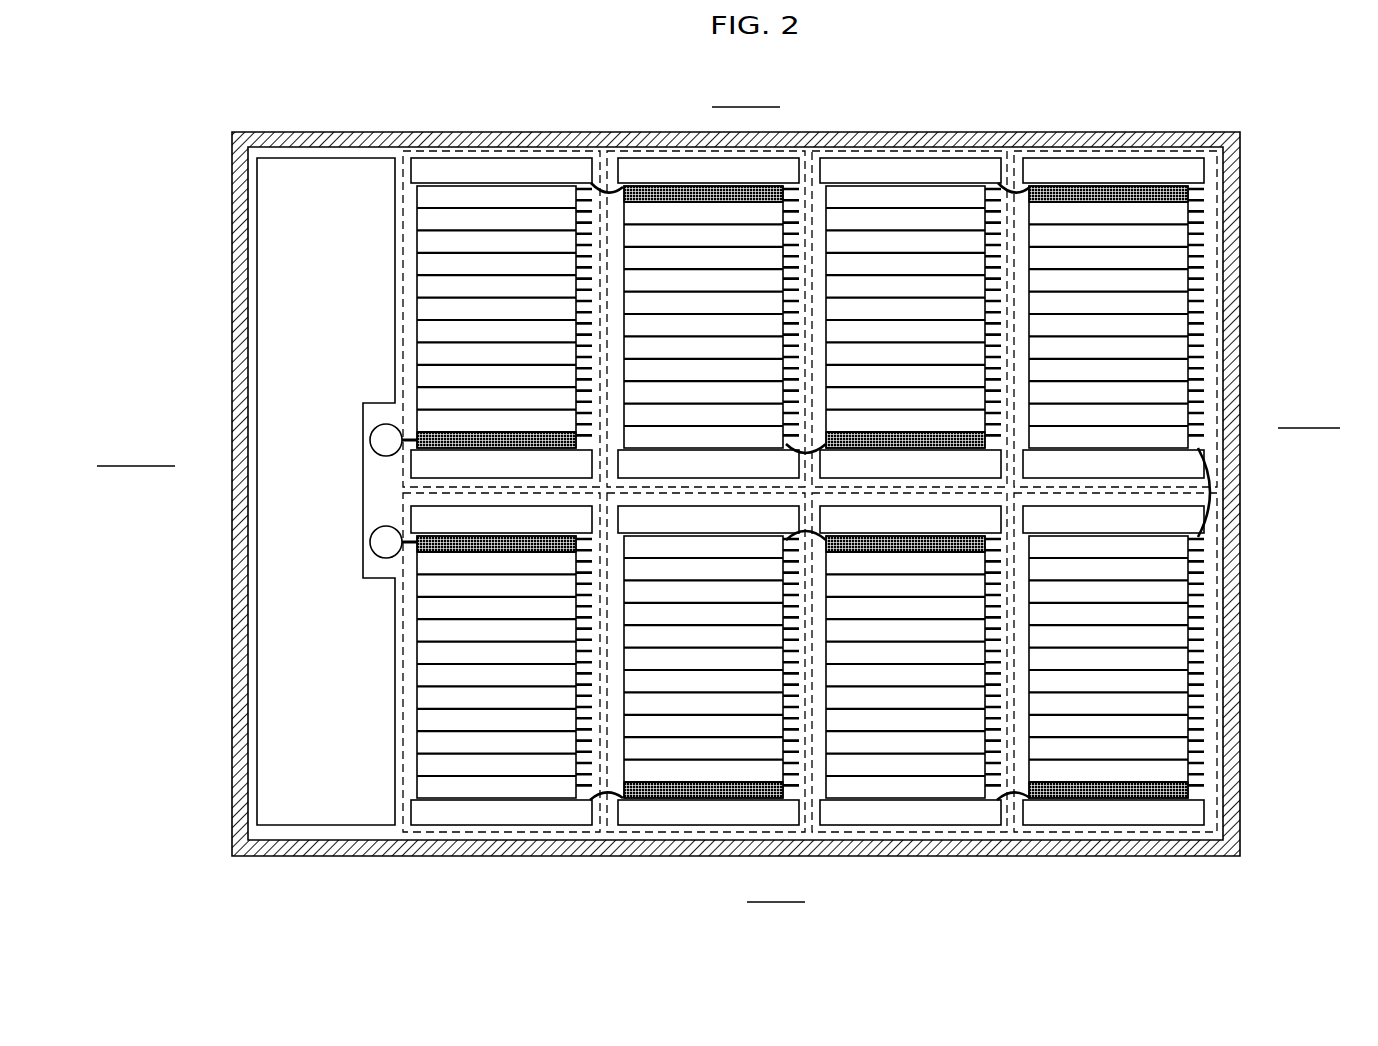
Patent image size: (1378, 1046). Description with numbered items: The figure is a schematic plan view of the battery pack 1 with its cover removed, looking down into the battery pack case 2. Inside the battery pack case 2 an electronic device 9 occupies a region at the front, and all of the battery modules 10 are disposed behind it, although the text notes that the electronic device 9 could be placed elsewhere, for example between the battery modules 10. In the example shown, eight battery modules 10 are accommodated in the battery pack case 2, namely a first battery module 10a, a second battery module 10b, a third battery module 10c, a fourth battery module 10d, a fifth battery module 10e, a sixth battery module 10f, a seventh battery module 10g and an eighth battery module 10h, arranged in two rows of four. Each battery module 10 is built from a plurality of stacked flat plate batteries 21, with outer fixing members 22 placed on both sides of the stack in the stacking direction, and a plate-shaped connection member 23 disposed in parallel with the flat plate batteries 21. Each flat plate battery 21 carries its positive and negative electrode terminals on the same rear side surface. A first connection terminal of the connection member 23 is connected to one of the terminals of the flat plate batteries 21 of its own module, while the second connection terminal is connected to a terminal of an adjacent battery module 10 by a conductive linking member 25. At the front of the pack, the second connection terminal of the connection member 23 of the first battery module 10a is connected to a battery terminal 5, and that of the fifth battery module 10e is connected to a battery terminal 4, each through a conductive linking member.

The battery pack 1 is at (219, 282).
The battery pack case 2 is at (298, 132).
The battery terminal 4 is at (386, 542).
The battery terminal 5 is at (386, 440).
The electronic device 9 is at (298, 790).
The battery module 10 is at (810, 489).
The first battery module 10a is at (560, 150).
The second battery module 10b is at (662, 150).
The third battery module 10c is at (855, 150).
The fourth battery module 10d is at (1085, 150).
The fifth battery module 10e is at (462, 832).
The sixth battery module 10f is at (680, 832).
The seventh battery module 10g is at (870, 832).
The eighth battery module 10h is at (1093, 832).
The flat plate battery 21 is at (462, 195).
The outer fixing member 22 is at (477, 163).
The connection member 23 is at (420, 432).
The linking member 25 is at (603, 185).